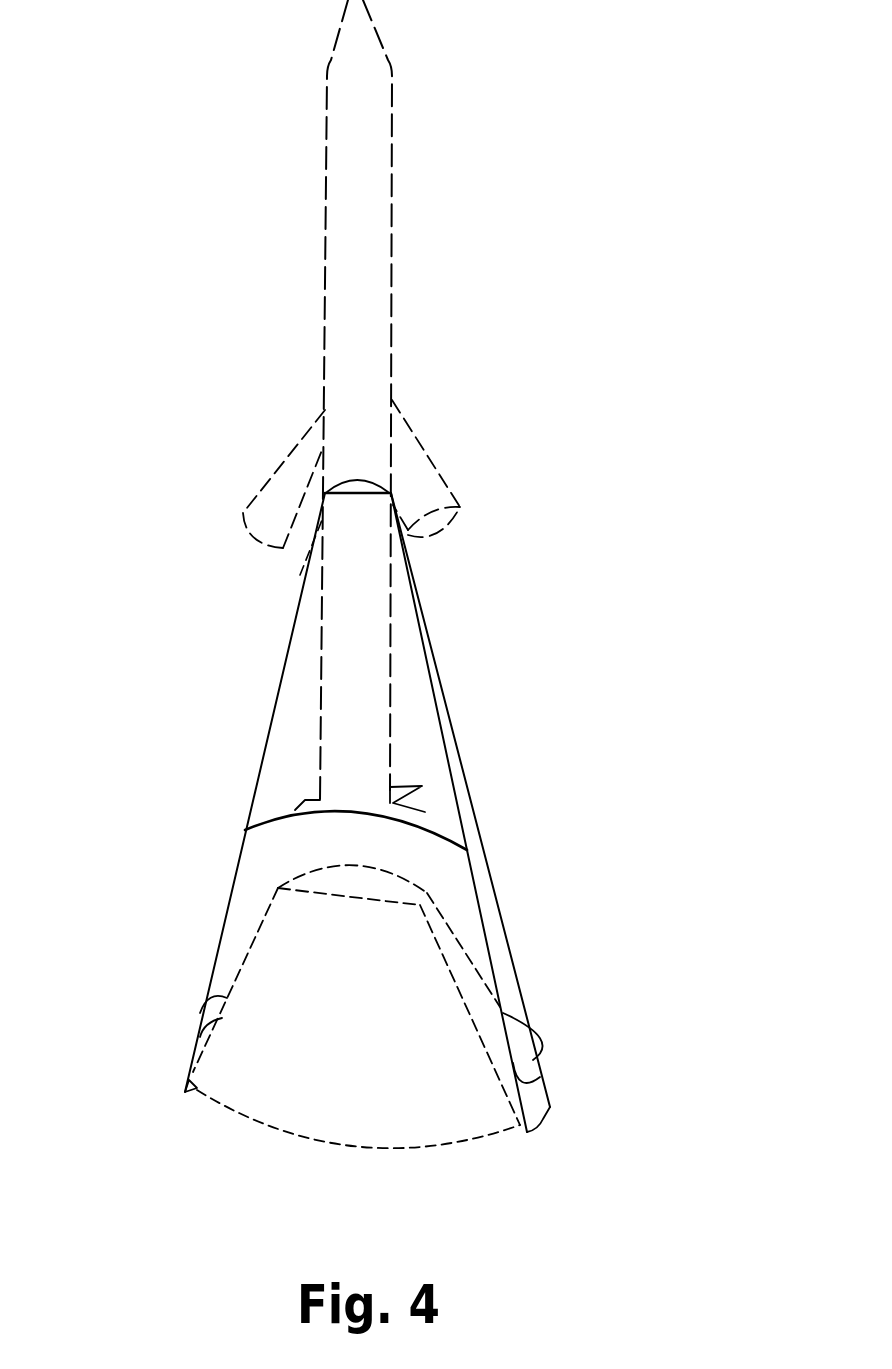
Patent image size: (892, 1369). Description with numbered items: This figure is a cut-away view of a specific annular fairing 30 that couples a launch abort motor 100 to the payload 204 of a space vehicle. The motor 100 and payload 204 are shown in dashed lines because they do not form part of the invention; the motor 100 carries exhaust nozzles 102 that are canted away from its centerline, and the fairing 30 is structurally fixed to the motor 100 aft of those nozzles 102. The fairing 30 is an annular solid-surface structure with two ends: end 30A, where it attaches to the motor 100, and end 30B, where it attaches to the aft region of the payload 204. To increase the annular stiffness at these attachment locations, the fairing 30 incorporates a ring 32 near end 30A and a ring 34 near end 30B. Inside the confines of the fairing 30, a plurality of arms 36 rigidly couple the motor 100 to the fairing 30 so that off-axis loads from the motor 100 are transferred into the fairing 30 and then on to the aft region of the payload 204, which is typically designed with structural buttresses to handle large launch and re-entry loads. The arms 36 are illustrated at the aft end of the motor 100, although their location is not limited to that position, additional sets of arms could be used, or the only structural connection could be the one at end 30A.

The launch abort motor 100 is at (439, 400).
The exhaust nozzles 102 is at (288, 459).
The annular fairing 30 is at (422, 812).
The end of annular fairing 30A is at (433, 415).
The end of annular fairing 30B is at (449, 1152).
The ring 32 is at (238, 571).
The ring 34 is at (389, 1046).
The arms 36 is at (353, 744).
The payload 204 is at (308, 1044).